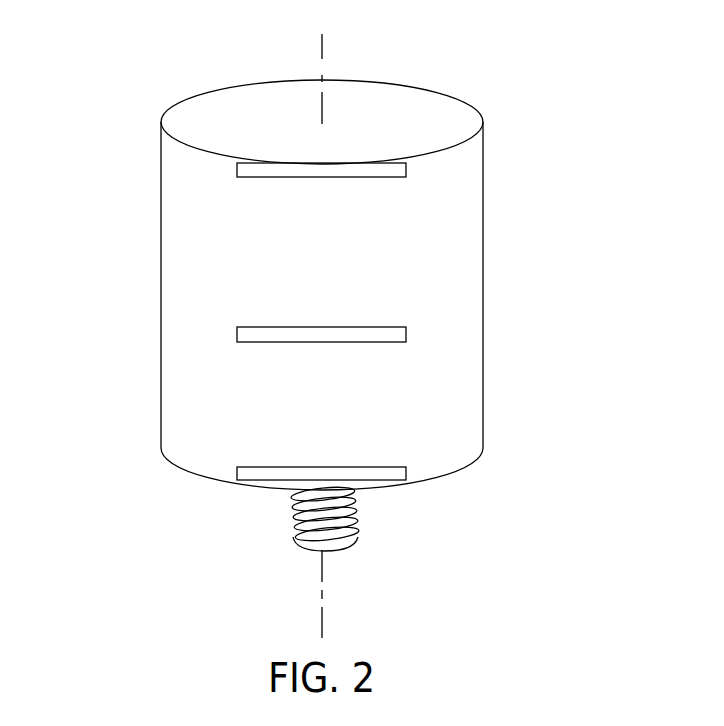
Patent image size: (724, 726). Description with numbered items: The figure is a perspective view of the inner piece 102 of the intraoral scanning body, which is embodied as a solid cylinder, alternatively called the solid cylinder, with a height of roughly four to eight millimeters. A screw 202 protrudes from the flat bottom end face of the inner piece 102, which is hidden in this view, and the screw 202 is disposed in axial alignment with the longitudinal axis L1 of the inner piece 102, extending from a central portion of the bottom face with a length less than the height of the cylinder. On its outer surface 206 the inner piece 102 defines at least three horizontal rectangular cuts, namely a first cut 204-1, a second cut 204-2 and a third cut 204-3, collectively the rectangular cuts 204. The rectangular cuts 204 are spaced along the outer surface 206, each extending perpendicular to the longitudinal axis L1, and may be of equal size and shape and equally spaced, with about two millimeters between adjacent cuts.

The inner piece 102 is at (114, 78).
The longitudinal axis L1 is at (322, 57).
The screw 202 is at (352, 530).
The rectangular cuts 204 is at (580, 185).
The first cut 204-1 is at (391, 169).
The second cut 204-2 is at (391, 334).
The third cut 204-3 is at (391, 473).
The outer surface 206 is at (190, 399).